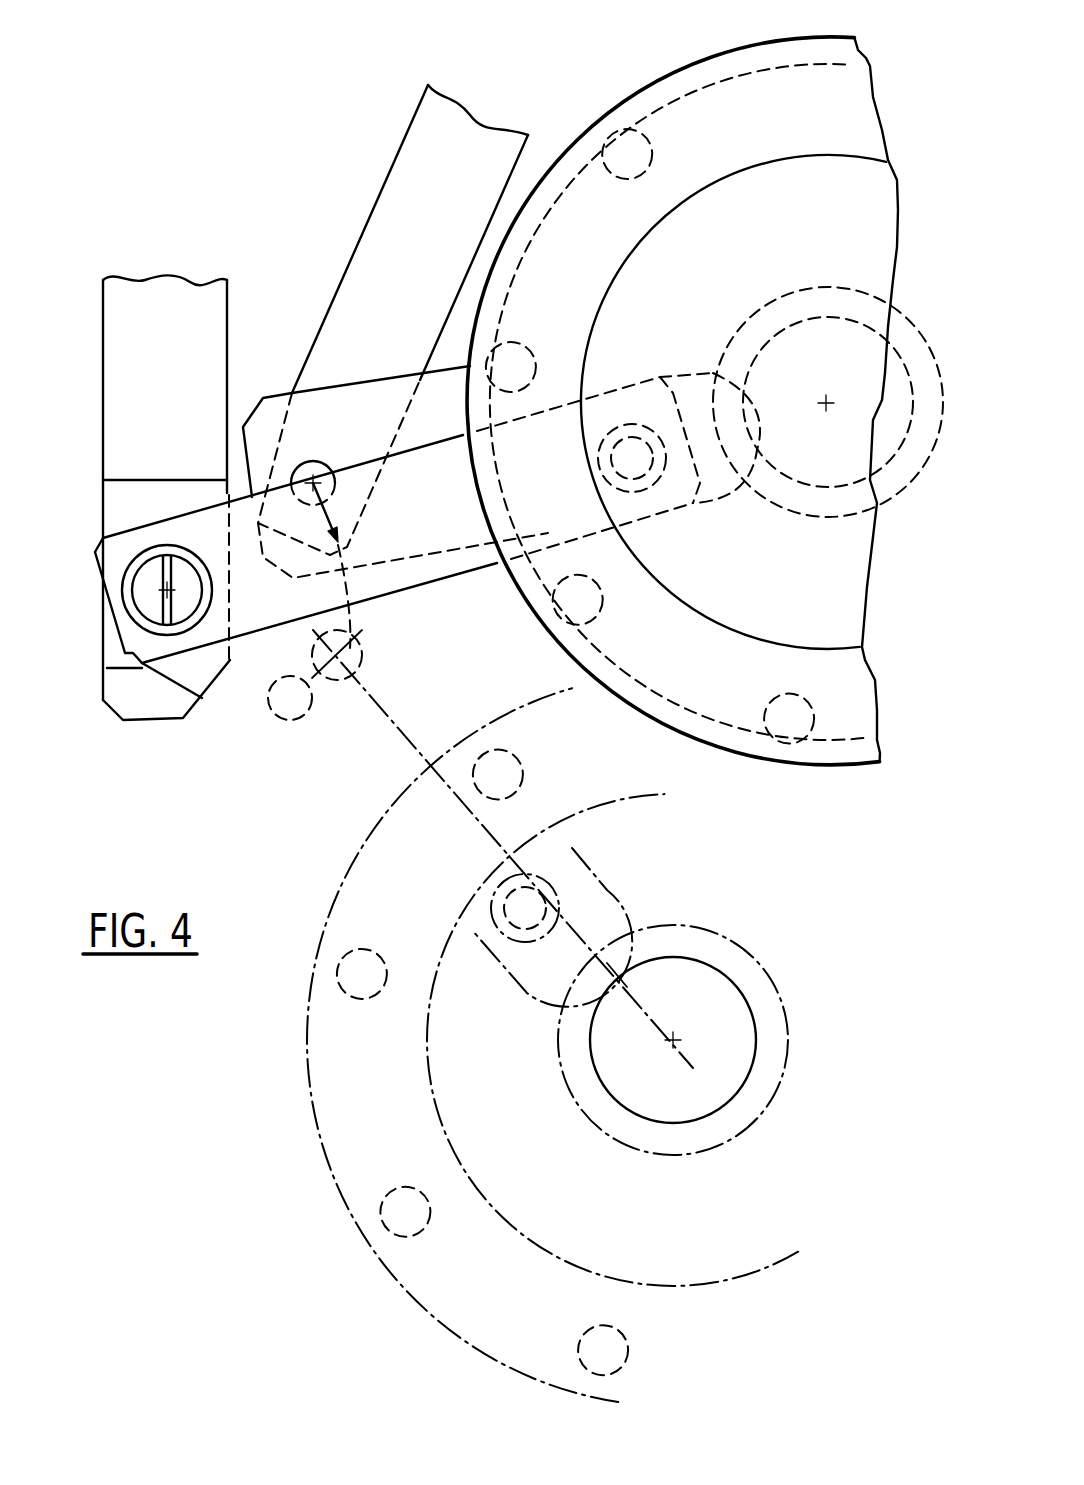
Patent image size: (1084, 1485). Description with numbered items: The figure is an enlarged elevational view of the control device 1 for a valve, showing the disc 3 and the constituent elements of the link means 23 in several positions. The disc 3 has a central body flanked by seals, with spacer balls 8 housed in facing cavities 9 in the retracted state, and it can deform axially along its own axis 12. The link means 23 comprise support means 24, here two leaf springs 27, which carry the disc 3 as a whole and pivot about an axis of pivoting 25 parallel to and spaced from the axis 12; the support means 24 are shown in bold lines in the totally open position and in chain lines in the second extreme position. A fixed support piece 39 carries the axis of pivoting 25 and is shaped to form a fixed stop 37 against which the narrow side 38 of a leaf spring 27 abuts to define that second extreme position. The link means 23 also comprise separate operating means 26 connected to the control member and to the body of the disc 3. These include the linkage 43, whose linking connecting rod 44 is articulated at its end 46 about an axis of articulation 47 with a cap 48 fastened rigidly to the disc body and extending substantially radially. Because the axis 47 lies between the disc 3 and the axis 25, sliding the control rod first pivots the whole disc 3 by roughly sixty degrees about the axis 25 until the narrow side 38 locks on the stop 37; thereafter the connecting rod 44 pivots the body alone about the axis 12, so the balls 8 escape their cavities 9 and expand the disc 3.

The control device 1 is at (244, 320).
The disc 3 is at (518, 600).
The spacer balls 8 is at (557, 648).
The cavities 9 is at (650, 436).
The axis 12 is at (830, 408).
The link means 23 is at (340, 347).
The support means 24 is at (200, 298).
The axis of pivoting 25 is at (167, 590).
The operating means 26 is at (413, 172).
The leaf springs 27 is at (112, 542).
The fixed stop 37 is at (187, 678).
The narrow side 38 is at (218, 640).
The fixed support piece 39 is at (200, 436).
The linkage 43 is at (507, 140).
The linking connecting rod 44 is at (458, 273).
The end 46 is at (303, 414).
The axis of articulation 47 is at (318, 480).
The cap 48 is at (430, 408).